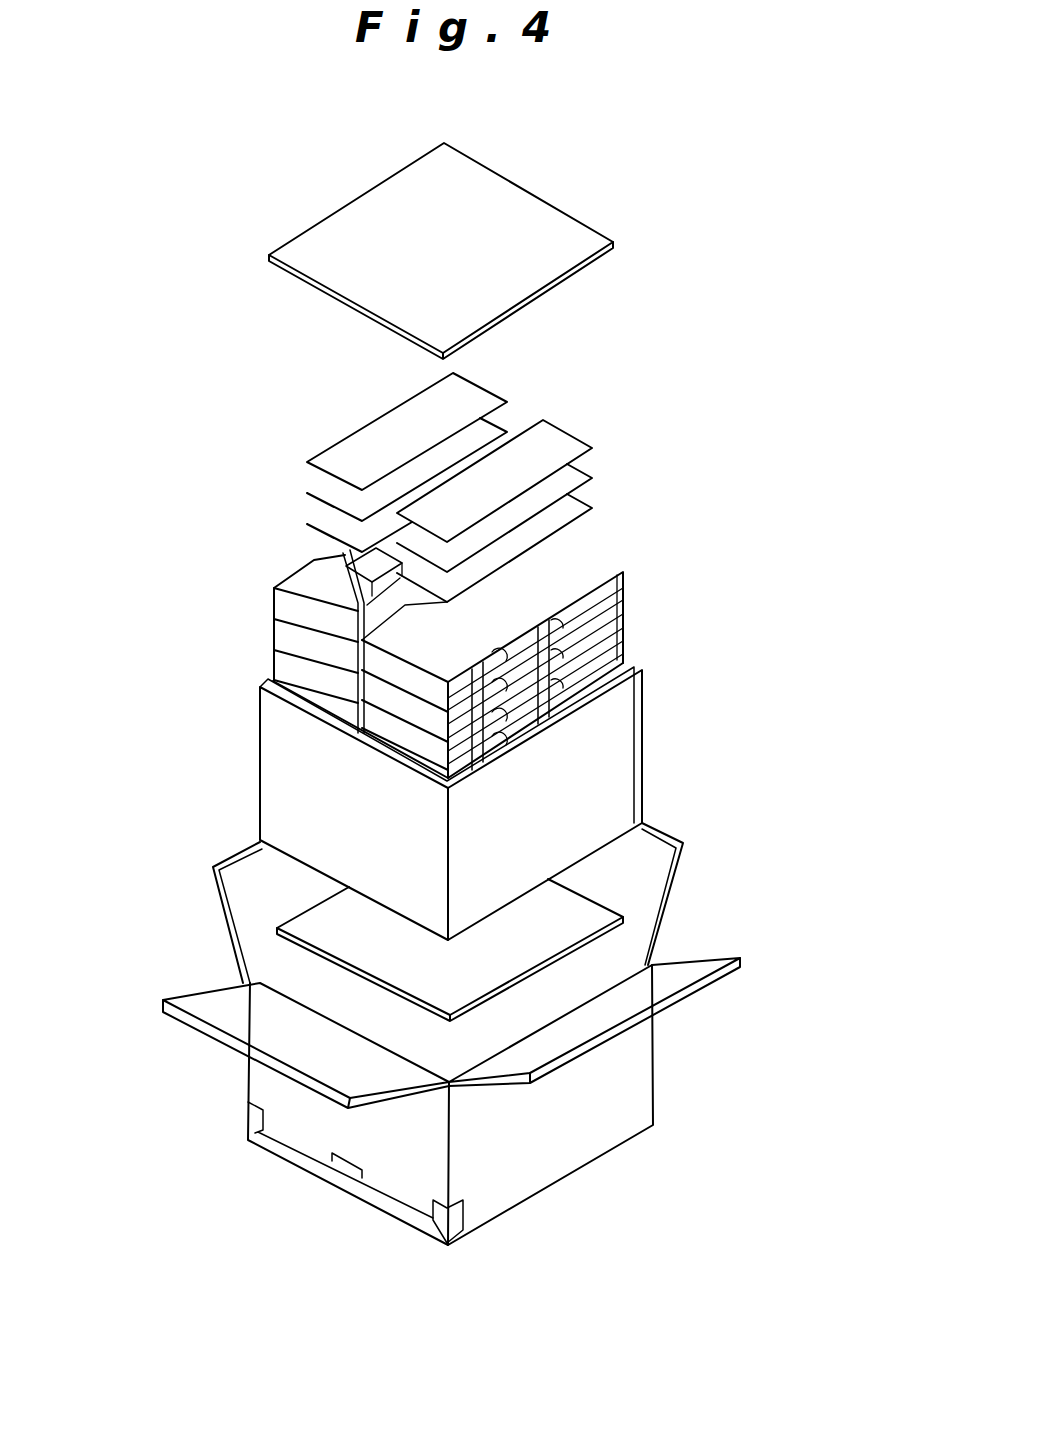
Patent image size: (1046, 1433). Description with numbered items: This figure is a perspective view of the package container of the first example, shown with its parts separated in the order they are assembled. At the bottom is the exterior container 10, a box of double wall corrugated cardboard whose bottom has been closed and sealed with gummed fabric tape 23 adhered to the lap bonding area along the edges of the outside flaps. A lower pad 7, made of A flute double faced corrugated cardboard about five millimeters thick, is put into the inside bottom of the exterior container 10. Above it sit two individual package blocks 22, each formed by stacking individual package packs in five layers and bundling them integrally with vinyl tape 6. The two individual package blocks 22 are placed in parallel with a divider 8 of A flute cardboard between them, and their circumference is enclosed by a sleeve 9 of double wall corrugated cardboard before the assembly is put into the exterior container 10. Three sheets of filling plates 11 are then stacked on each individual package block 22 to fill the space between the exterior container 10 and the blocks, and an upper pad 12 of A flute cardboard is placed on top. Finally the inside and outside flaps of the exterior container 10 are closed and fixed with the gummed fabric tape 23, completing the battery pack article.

The upper pad 12 is at (567, 257).
The filling plates 11 is at (337, 458).
The divider 8 is at (380, 613).
The individual package block 22 is at (265, 637).
The vinyl tape 6 is at (503, 712).
The sleeve 9 is at (300, 793).
The lower pad 7 is at (563, 925).
The exterior container 10 is at (597, 1148).
The gummed fabric tape 23 is at (347, 1170).